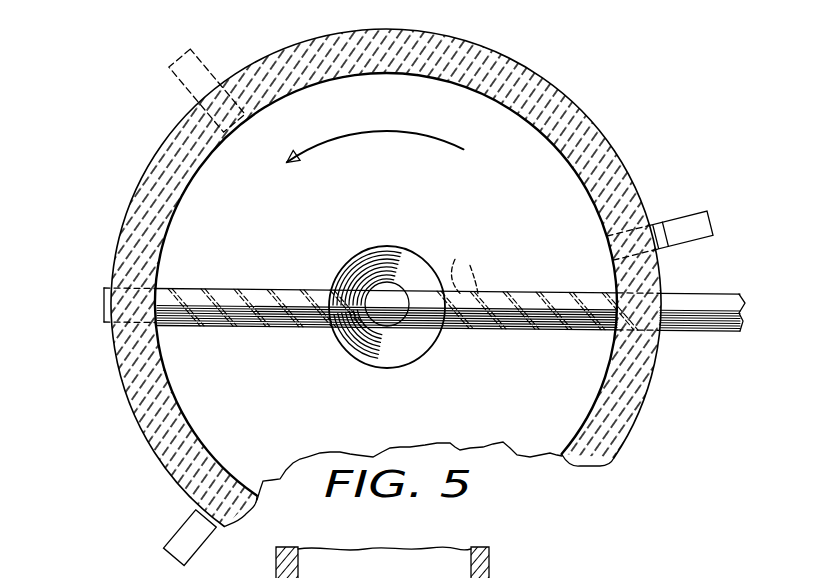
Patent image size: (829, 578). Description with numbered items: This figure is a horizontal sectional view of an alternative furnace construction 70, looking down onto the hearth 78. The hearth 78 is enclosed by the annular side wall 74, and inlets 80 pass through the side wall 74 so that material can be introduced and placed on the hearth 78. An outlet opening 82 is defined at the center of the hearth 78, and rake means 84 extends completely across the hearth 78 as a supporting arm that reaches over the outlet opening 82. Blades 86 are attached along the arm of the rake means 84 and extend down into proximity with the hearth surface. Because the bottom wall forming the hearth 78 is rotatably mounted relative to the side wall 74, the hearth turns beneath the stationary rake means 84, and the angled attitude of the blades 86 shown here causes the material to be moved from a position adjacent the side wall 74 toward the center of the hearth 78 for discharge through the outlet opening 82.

The furnace construction 70 is at (82, 194).
The side wall 74 is at (180, 153).
The hearth 78 is at (264, 408).
The inlets 80 is at (170, 62).
The outlet opening 82 is at (388, 355).
The rake means 84 is at (313, 327).
The blades 86 is at (248, 325).